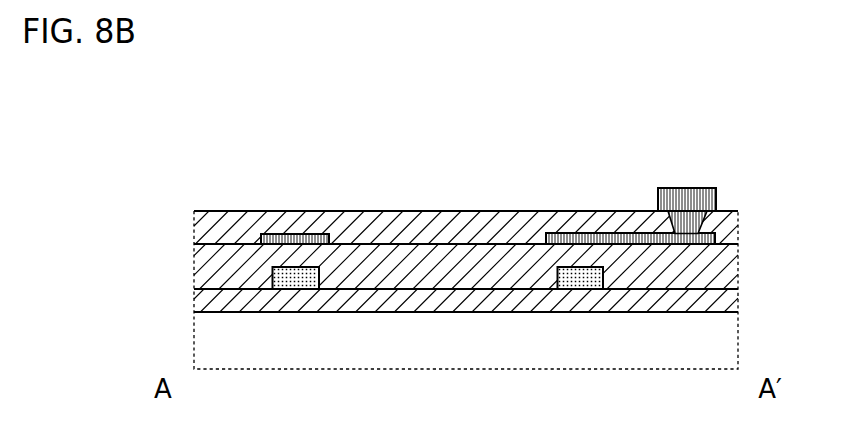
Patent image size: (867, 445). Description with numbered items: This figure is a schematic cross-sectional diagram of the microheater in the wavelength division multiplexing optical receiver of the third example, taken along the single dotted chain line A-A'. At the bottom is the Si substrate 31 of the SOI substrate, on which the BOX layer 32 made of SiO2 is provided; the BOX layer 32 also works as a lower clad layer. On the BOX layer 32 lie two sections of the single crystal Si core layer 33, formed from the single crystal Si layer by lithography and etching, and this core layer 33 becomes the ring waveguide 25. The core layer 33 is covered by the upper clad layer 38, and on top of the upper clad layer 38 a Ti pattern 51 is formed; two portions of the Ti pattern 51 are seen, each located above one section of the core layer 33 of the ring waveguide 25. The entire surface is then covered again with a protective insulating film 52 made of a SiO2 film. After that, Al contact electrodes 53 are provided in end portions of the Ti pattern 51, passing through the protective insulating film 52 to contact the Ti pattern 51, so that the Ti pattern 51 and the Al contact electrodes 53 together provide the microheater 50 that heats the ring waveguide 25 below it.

The Si substrate 31 is at (737, 345).
The BOX layer 32 is at (737, 297).
The upper clad layer 38 is at (737, 268).
The protective insulating film 52 is at (737, 223).
The Ti pattern 51 is at (295, 238).
The Al contact electrodes 53 is at (687, 188).
The microheater 50 is at (652, 164).
The single crystal Si core layer 33 is at (293, 272).
The ring waveguide 25 is at (450, 314).